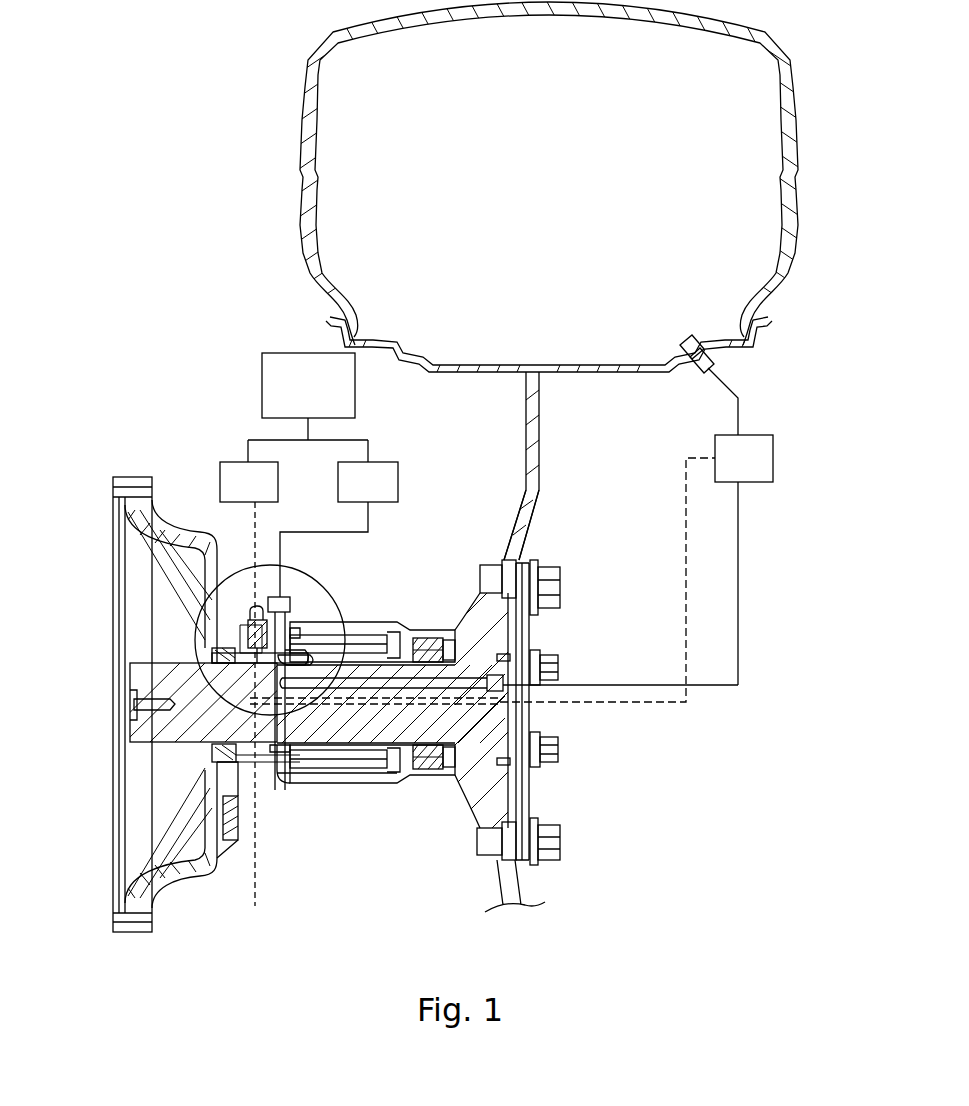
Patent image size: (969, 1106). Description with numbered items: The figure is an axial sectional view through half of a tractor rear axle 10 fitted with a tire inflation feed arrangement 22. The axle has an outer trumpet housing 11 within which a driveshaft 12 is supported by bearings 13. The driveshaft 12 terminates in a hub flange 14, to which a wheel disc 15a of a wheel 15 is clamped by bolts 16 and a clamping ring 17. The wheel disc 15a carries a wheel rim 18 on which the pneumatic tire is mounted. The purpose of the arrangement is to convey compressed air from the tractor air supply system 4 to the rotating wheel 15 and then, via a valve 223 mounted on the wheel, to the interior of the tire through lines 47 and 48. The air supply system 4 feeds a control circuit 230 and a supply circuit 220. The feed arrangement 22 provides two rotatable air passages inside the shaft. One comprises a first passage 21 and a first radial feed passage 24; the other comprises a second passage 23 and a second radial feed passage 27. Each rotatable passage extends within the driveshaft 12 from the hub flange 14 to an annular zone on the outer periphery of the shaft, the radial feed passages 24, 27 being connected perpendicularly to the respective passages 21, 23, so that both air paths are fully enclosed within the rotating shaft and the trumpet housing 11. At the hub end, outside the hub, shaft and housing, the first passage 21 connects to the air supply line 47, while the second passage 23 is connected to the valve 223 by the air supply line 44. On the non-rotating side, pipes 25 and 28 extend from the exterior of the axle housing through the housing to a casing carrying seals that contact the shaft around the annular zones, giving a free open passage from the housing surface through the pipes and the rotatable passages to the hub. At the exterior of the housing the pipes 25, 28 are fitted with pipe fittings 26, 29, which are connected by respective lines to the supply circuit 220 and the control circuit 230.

The air supply system 4 is at (300, 398).
The tractor rear axle 10 is at (238, 777).
The outer trumpet housing 11 is at (352, 783).
The driveshaft 12 is at (390, 730).
The bearings 13 is at (225, 663).
The hub flange 14 is at (505, 800).
The wheel 15 is at (497, 383).
The wheel disc 15a is at (535, 480).
The bolts 16 is at (530, 570).
The clamping ring 17 is at (530, 632).
The wheel rim 18 is at (530, 365).
The first passage 21 is at (418, 683).
The tire inflation feed arrangement 22 is at (292, 633).
The second passage 23 is at (375, 702).
The first radial feed passage 24 is at (285, 745).
The pipe 25 is at (300, 620).
The pipe fitting 26 is at (290, 600).
The second radial feed passage 27 is at (247, 627).
The pipe 28 is at (245, 640).
The pipe fitting 29 is at (244, 613).
The air supply line 44 is at (650, 702).
The air supply line 47 is at (620, 685).
The line 48 is at (727, 383).
The supply circuit 220 is at (347, 495).
The valve 223 is at (724, 471).
The control circuit 230 is at (228, 495).